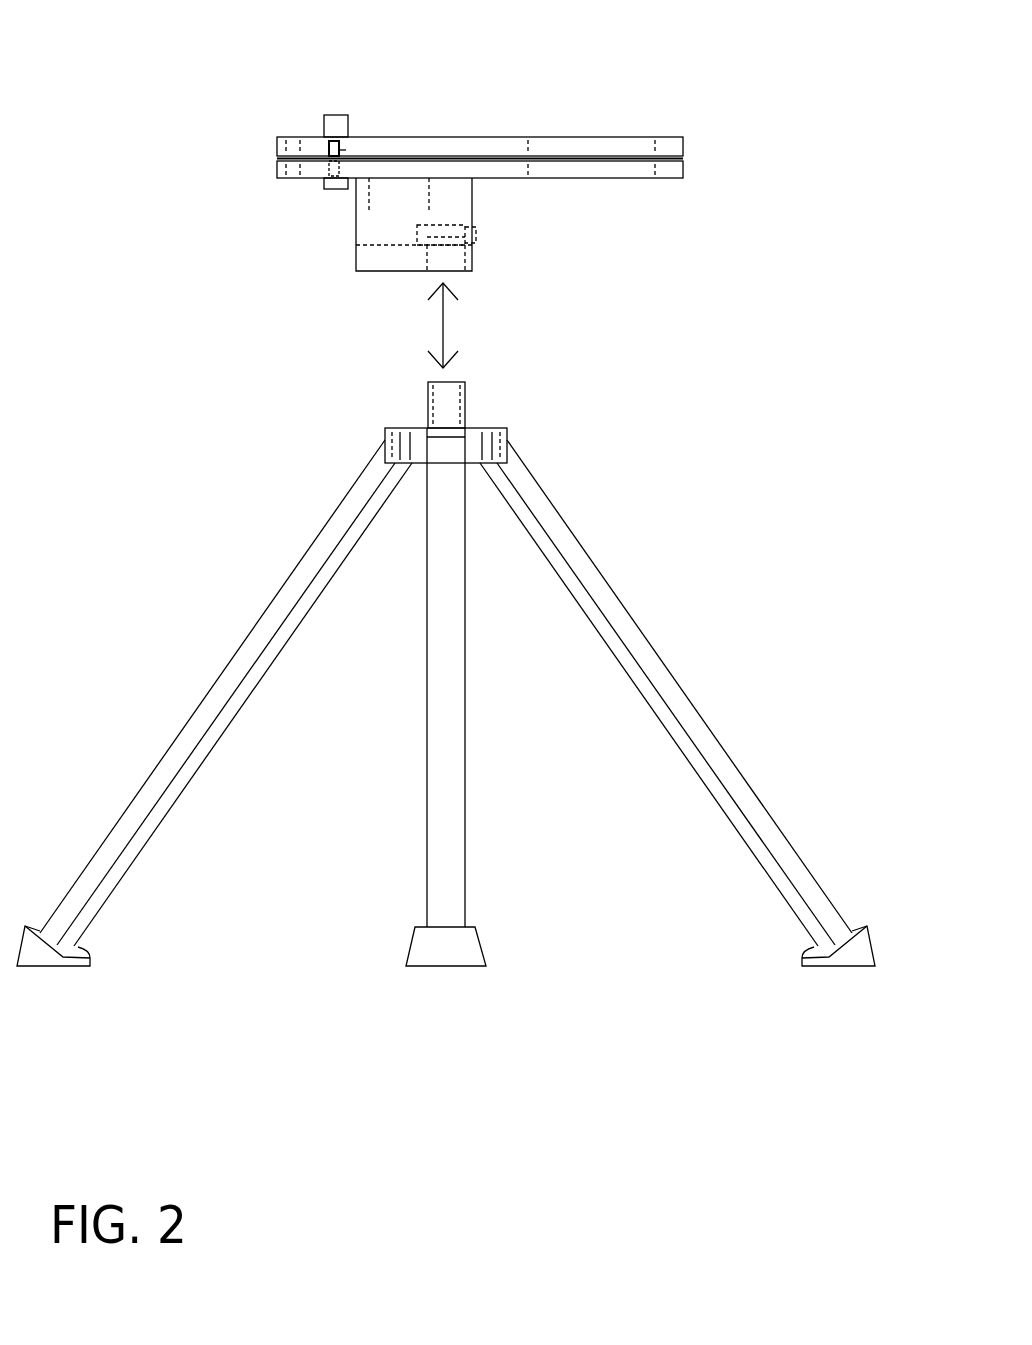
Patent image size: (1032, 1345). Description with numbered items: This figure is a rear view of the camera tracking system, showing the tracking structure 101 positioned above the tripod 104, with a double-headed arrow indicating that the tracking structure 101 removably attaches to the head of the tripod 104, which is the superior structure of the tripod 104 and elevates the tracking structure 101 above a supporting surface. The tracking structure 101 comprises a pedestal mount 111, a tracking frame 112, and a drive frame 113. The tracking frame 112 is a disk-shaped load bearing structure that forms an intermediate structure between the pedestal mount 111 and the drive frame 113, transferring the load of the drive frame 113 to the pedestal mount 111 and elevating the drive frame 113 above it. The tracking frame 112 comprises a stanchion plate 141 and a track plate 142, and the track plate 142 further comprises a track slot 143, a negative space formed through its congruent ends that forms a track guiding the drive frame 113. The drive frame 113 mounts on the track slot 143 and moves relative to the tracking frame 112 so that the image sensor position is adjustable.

The tracking structure 101 is at (607, 179).
The tracking frame 112 is at (555, 158).
The track plate 142 is at (655, 137).
The track slot 143 is at (668, 159).
The drive frame 113 is at (342, 115).
The pedestal mount 111 is at (542, 266).
The stanchion plate 141 is at (472, 206).
The tripod 104 is at (717, 742).